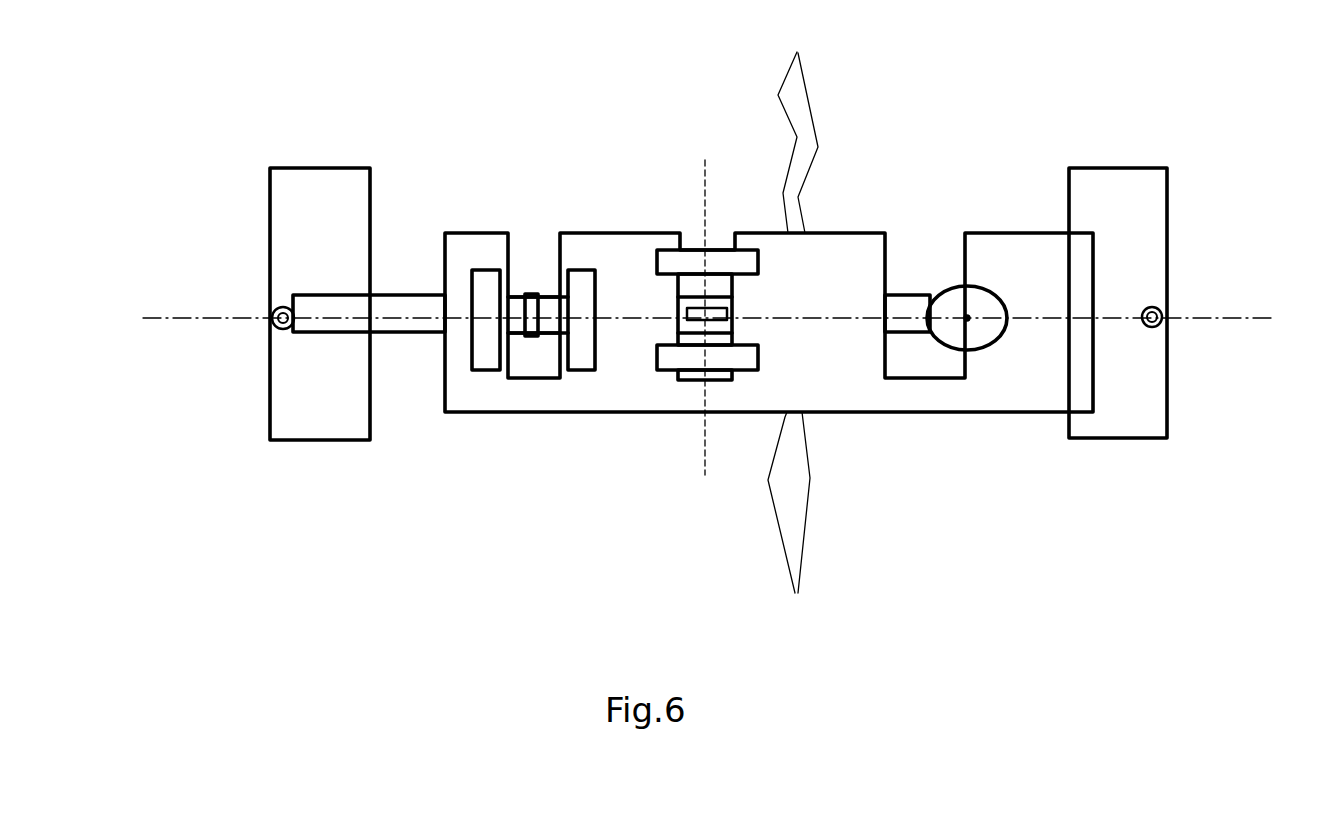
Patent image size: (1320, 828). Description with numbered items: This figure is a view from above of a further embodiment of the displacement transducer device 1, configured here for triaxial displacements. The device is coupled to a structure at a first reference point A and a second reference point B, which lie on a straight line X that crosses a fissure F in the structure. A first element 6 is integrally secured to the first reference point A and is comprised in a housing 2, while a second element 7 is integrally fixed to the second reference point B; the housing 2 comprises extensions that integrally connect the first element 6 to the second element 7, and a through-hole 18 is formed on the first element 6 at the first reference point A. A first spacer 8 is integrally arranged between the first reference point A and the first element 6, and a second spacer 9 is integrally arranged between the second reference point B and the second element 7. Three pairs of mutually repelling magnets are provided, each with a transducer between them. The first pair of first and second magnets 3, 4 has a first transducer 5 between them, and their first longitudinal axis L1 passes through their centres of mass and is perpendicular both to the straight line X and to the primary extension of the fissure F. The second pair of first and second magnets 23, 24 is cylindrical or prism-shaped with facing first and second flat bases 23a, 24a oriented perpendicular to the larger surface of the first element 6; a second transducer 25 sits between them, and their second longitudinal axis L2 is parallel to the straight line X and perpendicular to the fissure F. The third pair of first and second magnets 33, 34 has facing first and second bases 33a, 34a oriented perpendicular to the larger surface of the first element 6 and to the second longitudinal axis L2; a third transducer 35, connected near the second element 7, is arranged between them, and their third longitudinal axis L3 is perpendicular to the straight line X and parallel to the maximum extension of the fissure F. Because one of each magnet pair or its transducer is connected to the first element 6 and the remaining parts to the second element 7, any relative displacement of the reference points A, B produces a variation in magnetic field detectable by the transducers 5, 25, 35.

The displacement transducer device 1 is at (937, 97).
The housing 2 is at (1147, 282).
The first magnet 3 is at (960, 345).
The second magnet 4 is at (1007, 277).
The first transducer 5 is at (988, 288).
The first element 6 is at (872, 233).
The second element 7 is at (312, 317).
The first spacer 8 is at (1145, 397).
The second spacer 9 is at (325, 405).
The through-hole 18 is at (1167, 305).
The first magnet 23 is at (477, 303).
The first flat base 23a is at (512, 297).
The second magnet 24 is at (575, 287).
The second flat base 24a is at (562, 285).
The second transducer 25 is at (538, 295).
The first magnet 33 is at (730, 250).
The first base 33a is at (747, 280).
The second magnet 34 is at (732, 368).
The second base 34a is at (743, 347).
The third transducer 35 is at (735, 302).
The first longitudinal axis L1 is at (967, 318).
The second longitudinal axis L2 is at (437, 313).
The third longitudinal axis L3 is at (705, 180).
The first reference point A is at (1168, 337).
The second reference point B is at (273, 322).
The straight line X is at (195, 318).
The fissure F is at (790, 527).